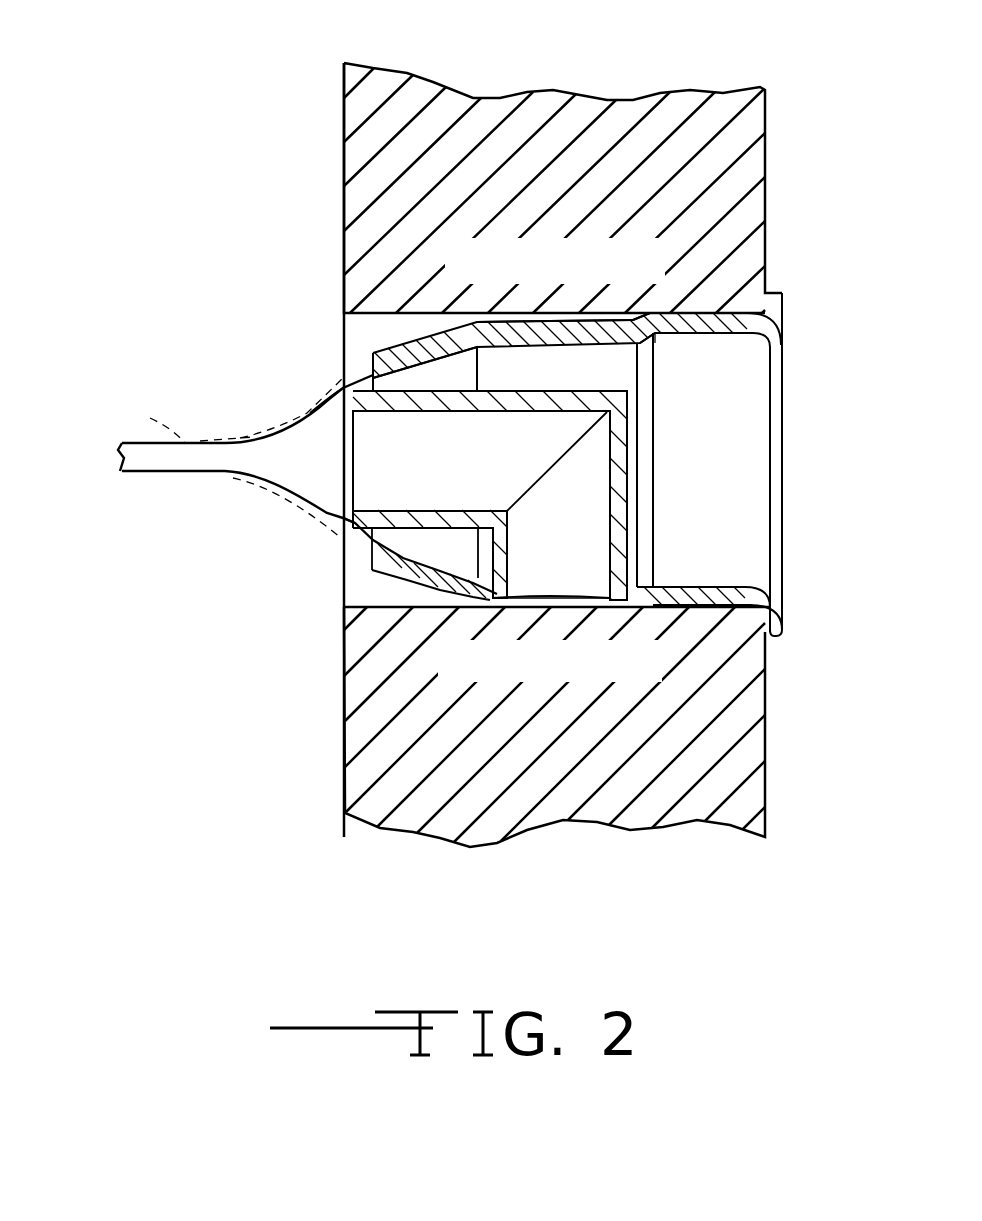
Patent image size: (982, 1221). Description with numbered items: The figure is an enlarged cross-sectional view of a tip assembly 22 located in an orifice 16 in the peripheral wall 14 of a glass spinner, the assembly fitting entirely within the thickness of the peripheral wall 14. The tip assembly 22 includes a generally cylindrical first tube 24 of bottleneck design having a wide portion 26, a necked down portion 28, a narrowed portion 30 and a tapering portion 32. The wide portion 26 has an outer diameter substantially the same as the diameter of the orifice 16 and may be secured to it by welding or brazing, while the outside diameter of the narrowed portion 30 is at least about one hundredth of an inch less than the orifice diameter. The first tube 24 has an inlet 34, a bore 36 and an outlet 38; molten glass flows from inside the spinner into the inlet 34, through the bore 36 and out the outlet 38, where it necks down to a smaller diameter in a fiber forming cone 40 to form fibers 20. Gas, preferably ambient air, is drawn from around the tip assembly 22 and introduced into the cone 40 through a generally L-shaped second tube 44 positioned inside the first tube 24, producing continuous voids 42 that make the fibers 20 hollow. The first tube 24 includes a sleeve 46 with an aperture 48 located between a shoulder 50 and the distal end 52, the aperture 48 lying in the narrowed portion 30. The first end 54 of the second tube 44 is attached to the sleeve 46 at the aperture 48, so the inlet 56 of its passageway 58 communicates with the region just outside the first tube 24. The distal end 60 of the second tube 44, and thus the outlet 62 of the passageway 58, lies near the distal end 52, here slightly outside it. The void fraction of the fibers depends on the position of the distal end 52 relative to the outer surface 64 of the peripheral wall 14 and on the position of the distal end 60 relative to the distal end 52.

The peripheral wall 14 is at (560, 127).
The orifice 16 is at (707, 617).
The fibers 20 is at (150, 475).
The tip assembly 22 is at (200, 346).
The first tube 24 is at (562, 322).
The wide portion 26 is at (705, 315).
The necked down portion 28 is at (637, 318).
The narrowed portion 30 is at (497, 335).
The tapering portion 32 is at (370, 338).
The inlet 34 is at (795, 435).
The bore 36 is at (735, 483).
The outlet 38 is at (343, 380).
The fiber forming cone 40 is at (297, 413).
The continuous voids 42 is at (150, 418).
The second tube 44 is at (423, 496).
The sleeve 46 is at (400, 581).
The aperture 48 is at (490, 600).
The shoulder 50 is at (785, 607).
The distal end 52 is at (368, 557).
The first end 54 is at (632, 602).
The inlet 56 is at (556, 599).
The passageway 58 is at (590, 559).
The distal end 60 is at (340, 518).
The outlet 62 is at (366, 452).
The outer surface 64 is at (341, 135).